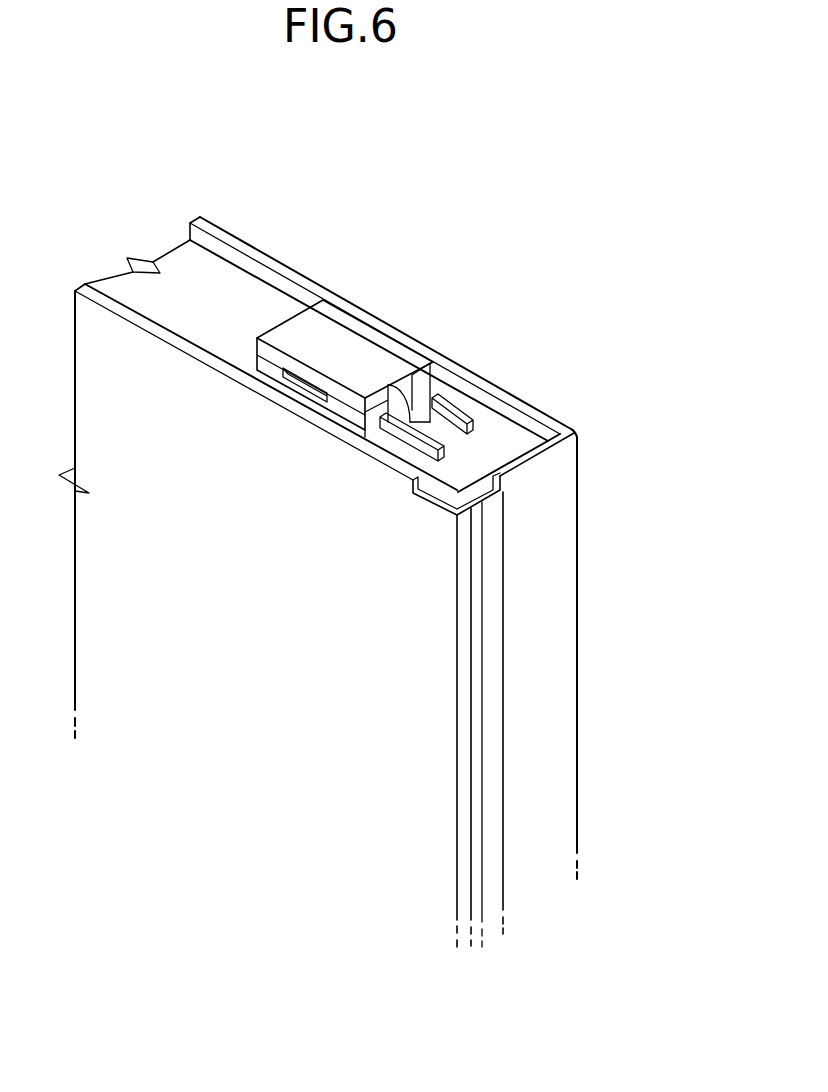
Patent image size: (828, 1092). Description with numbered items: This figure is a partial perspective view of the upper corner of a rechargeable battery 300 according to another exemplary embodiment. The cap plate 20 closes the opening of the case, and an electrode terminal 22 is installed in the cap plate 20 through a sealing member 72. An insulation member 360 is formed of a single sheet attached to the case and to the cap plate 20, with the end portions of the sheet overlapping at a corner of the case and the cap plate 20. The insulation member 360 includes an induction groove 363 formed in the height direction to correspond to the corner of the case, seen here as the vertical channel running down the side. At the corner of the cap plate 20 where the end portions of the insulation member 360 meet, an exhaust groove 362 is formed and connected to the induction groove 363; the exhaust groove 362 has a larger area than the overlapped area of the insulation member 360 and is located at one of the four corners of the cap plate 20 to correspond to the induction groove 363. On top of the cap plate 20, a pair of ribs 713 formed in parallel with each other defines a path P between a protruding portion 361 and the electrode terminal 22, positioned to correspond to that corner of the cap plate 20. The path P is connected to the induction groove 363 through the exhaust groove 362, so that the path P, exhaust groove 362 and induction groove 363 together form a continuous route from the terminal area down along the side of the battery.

The rechargeable battery 300 is at (424, 195).
The cap plate 20 is at (203, 277).
The electrode terminal 22 is at (347, 333).
The sealing member 72 is at (263, 367).
The insulation member 360 is at (203, 655).
The protruding portion 361 is at (450, 368).
The exhaust groove 362 is at (443, 510).
The induction groove 363 is at (477, 719).
The pair of ribs 713 is at (440, 452).
The path P is at (513, 430).